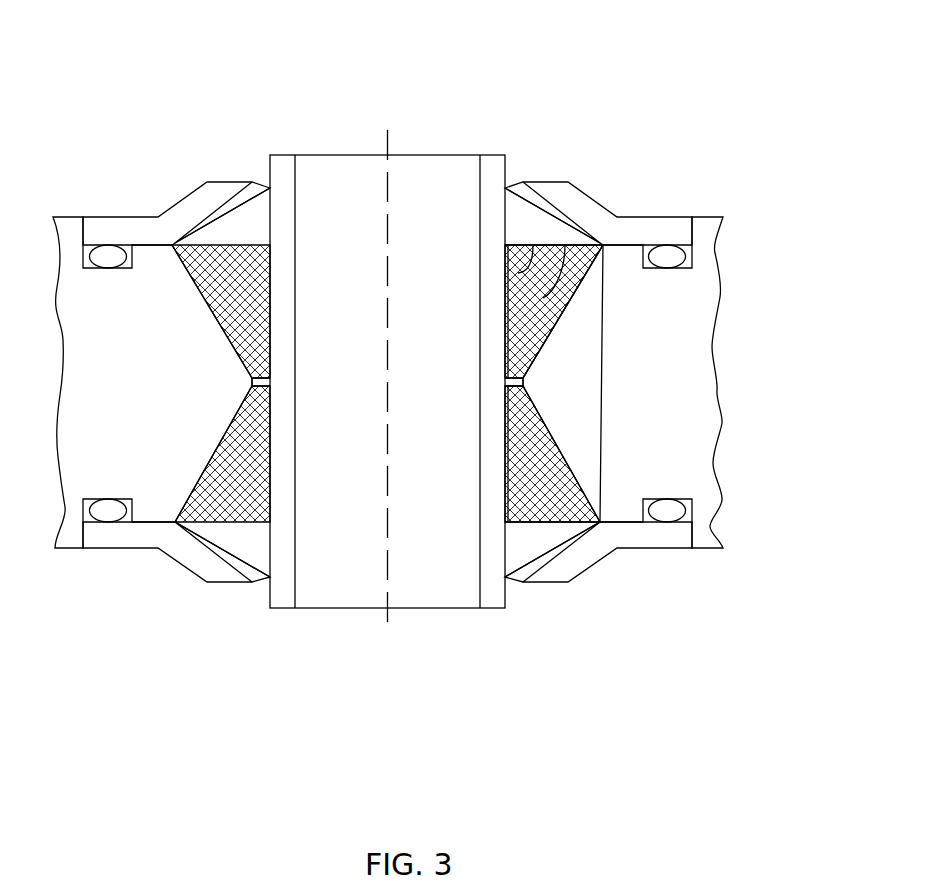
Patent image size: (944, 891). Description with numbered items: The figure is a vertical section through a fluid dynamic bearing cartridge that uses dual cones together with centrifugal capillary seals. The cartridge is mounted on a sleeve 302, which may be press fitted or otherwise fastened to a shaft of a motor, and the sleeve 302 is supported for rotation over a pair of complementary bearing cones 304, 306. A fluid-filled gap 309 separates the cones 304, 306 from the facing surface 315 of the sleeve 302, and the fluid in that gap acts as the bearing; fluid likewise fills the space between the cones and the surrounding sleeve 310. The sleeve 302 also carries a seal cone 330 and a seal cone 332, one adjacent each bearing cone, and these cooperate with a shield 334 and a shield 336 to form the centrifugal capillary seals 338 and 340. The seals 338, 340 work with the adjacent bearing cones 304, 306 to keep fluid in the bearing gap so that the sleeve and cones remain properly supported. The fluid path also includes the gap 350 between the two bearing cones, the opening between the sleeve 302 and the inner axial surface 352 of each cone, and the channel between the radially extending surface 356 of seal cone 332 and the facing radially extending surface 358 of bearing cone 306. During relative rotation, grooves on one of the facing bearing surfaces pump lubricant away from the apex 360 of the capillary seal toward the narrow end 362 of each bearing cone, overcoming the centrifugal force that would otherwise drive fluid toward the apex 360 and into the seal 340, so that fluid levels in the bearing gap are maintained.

The sleeve 302 is at (493, 162).
The bearing cone 304 is at (550, 330).
The bearing cone 306 is at (565, 458).
The fluid-filled gap 309 is at (577, 293).
The surrounding sleeve 310 is at (720, 415).
The facing surface 315 is at (508, 357).
The cone 330 is at (517, 567).
The cone 332 is at (523, 222).
The shield 334 is at (598, 557).
The shield 336 is at (605, 218).
The centrifugal capillary seal 338 is at (533, 566).
The centrifugal capillary seal 340 is at (528, 143).
The gap 350 is at (523, 385).
The inner axial surface 352 is at (508, 352).
The radially extending surface 356 is at (510, 273).
The radially extending surface 358 is at (540, 300).
The apex 360 is at (188, 236).
The narrow end 362 is at (257, 383).